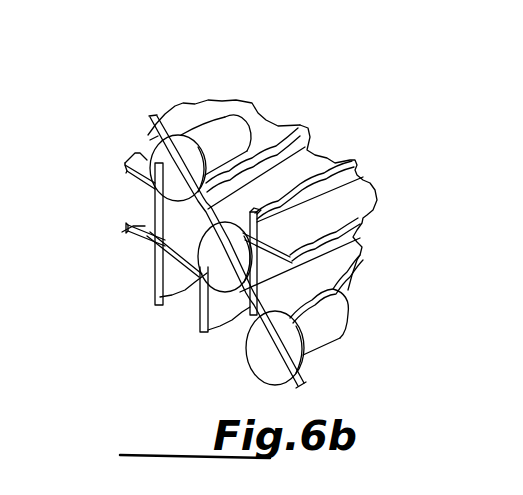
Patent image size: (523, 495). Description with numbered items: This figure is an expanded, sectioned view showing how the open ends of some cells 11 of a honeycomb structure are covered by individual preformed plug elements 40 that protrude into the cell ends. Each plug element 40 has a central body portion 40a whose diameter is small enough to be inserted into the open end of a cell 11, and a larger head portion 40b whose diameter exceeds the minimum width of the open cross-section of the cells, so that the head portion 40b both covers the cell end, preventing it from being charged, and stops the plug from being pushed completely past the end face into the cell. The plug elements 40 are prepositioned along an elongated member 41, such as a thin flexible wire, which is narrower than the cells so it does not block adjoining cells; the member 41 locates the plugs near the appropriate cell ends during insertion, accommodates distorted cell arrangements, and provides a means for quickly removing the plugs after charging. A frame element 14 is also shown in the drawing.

The plug element 40 is at (229, 135).
The central body portion 40a is at (253, 136).
The head portion 40b is at (183, 140).
The elongated member 41 is at (153, 136).
The bracket 14 is at (125, 177).
The cell 11 is at (198, 235).